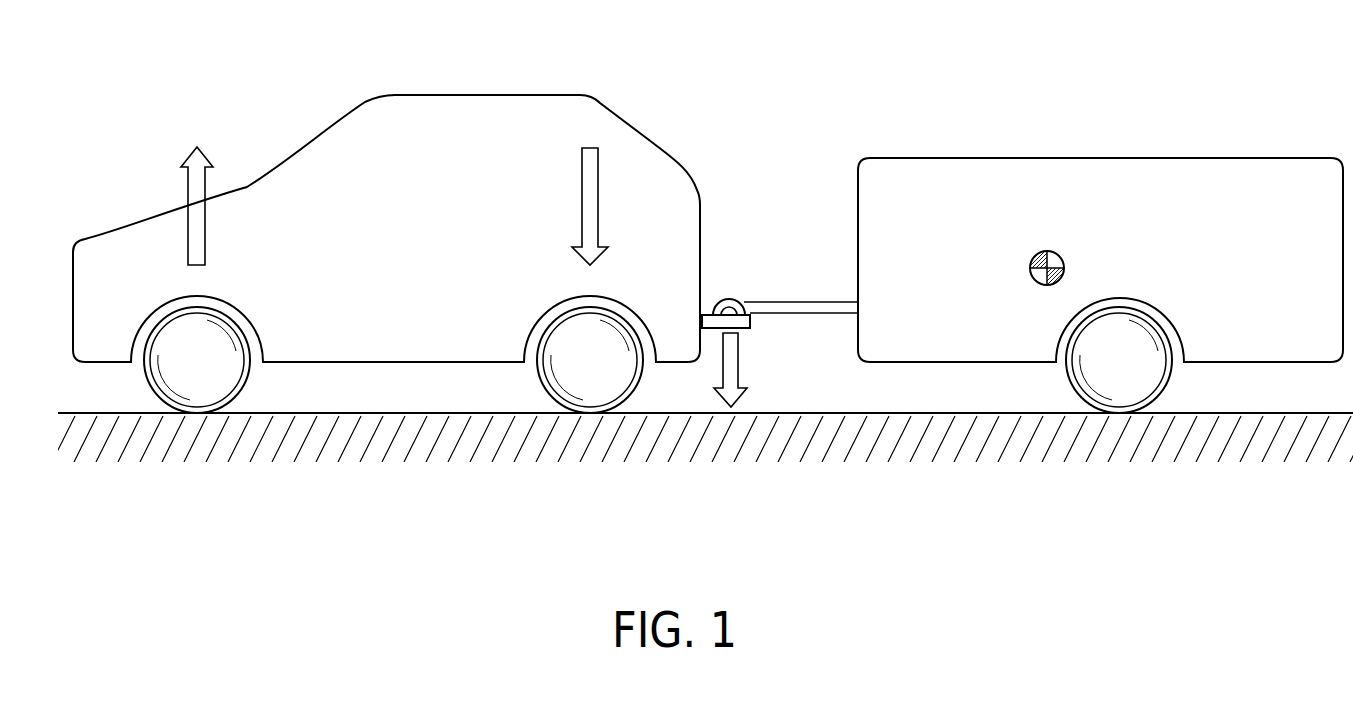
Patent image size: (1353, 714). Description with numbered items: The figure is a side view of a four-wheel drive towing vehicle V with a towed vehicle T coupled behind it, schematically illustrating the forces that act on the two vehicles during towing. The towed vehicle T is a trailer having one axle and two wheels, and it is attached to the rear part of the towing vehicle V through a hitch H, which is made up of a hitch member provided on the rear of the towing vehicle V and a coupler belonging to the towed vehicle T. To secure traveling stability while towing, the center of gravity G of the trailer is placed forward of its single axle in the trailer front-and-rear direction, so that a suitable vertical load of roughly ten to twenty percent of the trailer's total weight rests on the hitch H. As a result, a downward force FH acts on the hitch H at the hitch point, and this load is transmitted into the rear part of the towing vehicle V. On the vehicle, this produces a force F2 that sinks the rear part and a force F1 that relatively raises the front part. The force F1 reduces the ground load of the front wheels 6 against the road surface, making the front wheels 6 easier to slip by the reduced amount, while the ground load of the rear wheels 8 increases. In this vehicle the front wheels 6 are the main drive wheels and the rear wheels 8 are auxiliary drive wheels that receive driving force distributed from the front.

The towing vehicle V is at (427, 95).
The towed vehicle T is at (1273, 158).
The hitch H is at (730, 297).
The center of gravity G is at (1047, 286).
The front wheels 6 is at (247, 388).
The rear wheels 8 is at (642, 388).
The force which raises the front part F1 is at (183, 177).
The force which sinks the rear part F2 is at (580, 190).
The downward force FH is at (742, 352).